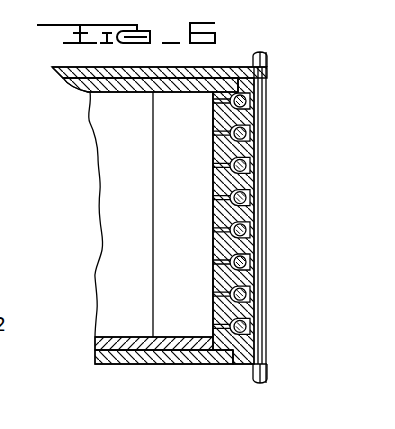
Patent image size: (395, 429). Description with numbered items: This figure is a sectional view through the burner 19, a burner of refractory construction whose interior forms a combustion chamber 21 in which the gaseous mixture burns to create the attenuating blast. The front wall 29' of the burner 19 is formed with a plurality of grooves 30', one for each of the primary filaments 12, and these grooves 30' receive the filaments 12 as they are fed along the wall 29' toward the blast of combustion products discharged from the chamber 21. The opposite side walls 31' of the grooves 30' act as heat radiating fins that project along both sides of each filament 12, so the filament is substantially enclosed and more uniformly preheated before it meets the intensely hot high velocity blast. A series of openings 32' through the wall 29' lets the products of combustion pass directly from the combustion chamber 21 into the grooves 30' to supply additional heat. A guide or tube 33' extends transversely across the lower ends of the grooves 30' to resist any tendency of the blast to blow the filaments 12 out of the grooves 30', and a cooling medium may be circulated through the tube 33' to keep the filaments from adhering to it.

The guide or tube 33' is at (287, 61).
The grooves 30' is at (276, 213).
The side walls of the grooves 31' is at (267, 221).
The front wall 29' is at (202, 214).
The openings 32' is at (203, 213).
The primary filaments 12 is at (250, 261).
The combustion chamber 21 is at (115, 251).
The burner 19 is at (217, 353).